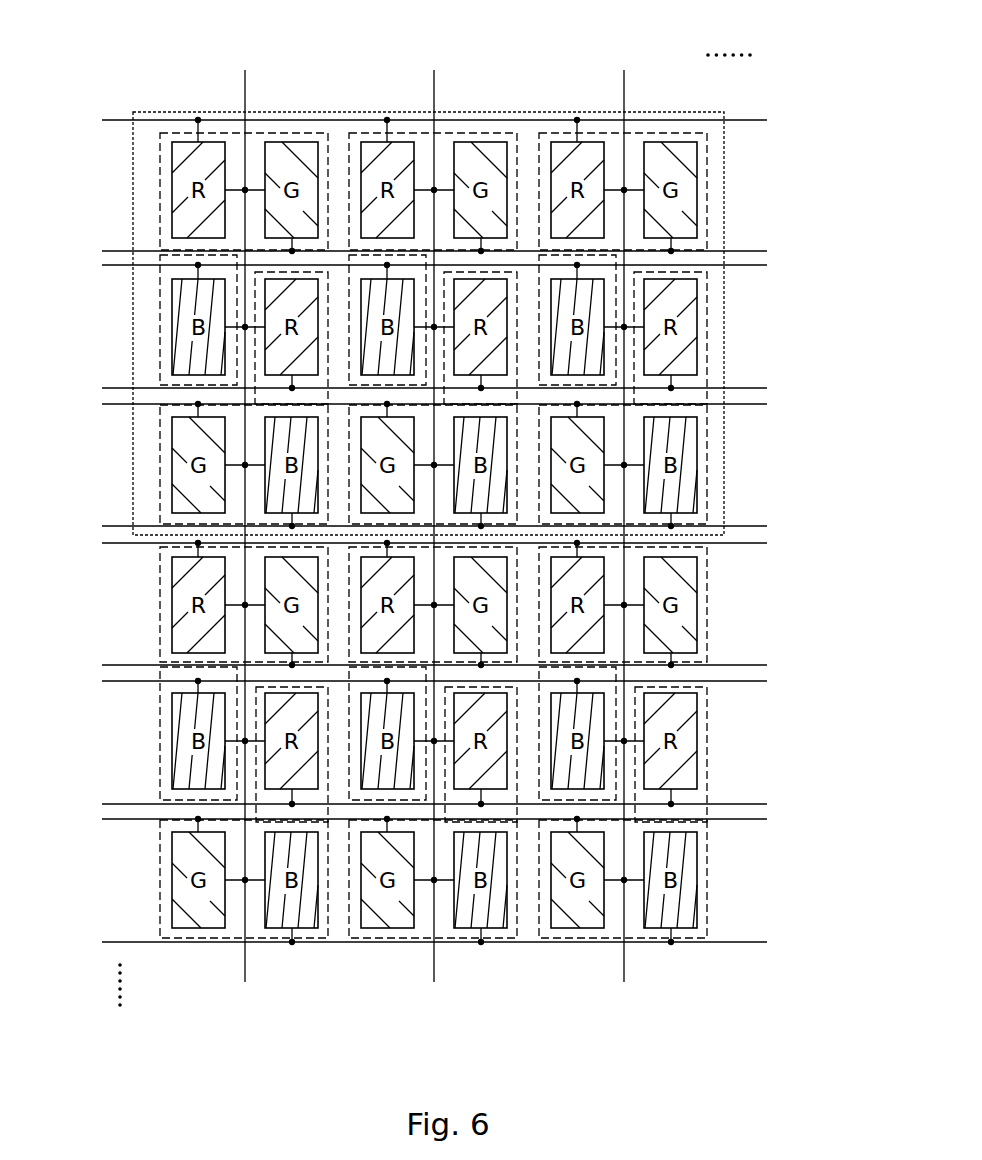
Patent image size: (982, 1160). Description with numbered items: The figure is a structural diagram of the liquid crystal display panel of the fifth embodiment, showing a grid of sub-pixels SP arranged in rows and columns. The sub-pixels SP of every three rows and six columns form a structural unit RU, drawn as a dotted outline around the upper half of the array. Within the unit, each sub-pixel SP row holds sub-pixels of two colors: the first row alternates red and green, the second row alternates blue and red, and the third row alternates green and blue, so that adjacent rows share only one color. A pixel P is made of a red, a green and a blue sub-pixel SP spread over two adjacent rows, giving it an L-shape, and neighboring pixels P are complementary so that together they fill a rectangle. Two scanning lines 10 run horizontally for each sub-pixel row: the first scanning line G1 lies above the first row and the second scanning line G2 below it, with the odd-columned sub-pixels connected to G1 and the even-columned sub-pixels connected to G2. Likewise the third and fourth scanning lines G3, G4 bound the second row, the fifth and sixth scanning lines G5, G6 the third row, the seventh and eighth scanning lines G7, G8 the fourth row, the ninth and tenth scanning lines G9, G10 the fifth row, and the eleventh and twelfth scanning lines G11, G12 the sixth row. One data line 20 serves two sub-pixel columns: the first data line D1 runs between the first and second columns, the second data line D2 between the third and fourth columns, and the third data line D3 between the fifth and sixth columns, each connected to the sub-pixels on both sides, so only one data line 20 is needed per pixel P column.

The scanning line 10 is at (448, 527).
The data line 20 is at (539, 506).
The structural unit RU is at (133, 112).
The pixel P is at (160, 250).
The sub-pixel SP is at (698, 227).
The first scanning line G1 is at (416, 119).
The second scanning line G2 is at (416, 242).
The third scanning line G3 is at (416, 269).
The fourth scanning line G4 is at (416, 379).
The fifth scanning line G5 is at (416, 412).
The sixth scanning line G6 is at (416, 519).
The seventh scanning line G7 is at (416, 552).
The eighth scanning line G8 is at (416, 662).
The ninth scanning line G9 is at (416, 687).
The tenth scanning line G10 is at (409, 795).
The eleventh scanning line G11 is at (409, 825).
The twelfth scanning line G12 is at (409, 934).
The first data line D1 is at (249, 508).
The second data line D2 is at (437, 508).
The third data line D3 is at (626, 508).